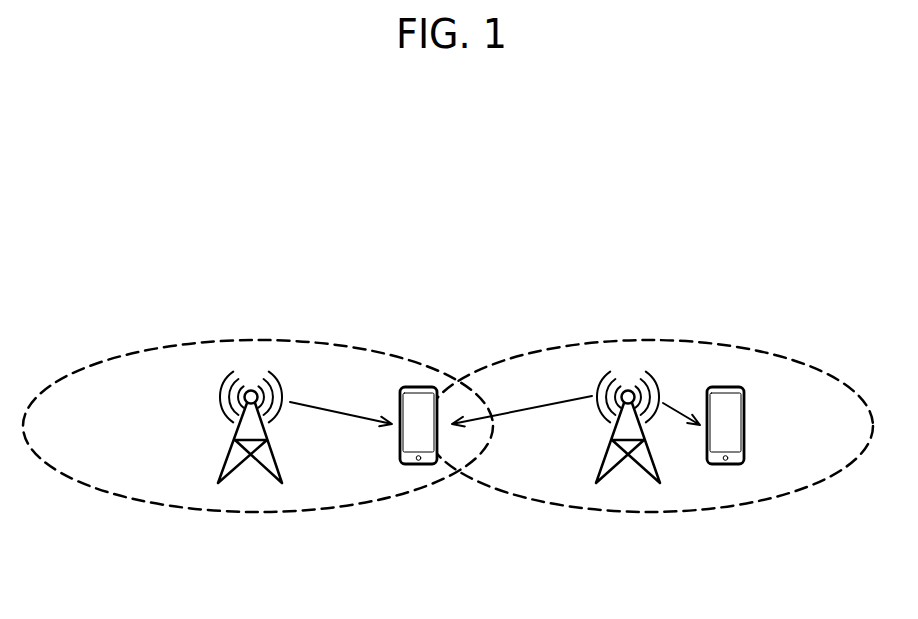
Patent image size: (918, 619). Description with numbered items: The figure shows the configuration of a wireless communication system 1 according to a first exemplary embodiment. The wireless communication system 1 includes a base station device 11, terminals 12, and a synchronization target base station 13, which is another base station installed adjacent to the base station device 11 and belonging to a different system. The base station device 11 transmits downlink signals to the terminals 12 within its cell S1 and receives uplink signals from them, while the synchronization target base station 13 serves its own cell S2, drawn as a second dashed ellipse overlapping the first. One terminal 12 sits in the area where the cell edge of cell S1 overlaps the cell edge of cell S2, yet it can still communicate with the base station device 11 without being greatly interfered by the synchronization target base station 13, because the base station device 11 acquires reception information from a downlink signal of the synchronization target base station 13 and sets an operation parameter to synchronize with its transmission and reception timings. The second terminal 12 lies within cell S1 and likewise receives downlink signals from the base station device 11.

The wireless communication system 1 is at (511, 262).
The base station device 11 is at (610, 447).
The terminal 12 is at (413, 387).
The synchronization target base station 13 is at (232, 447).
The cell S1 is at (633, 513).
The cell S2 is at (260, 514).